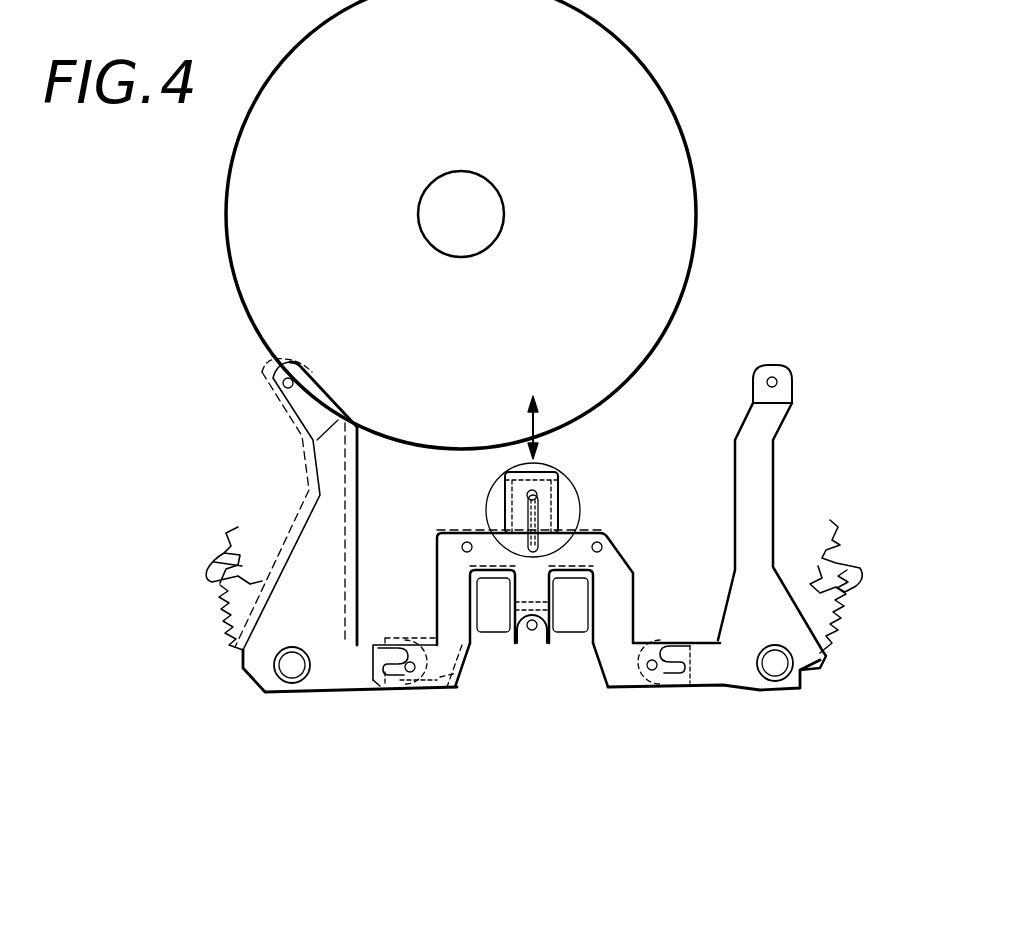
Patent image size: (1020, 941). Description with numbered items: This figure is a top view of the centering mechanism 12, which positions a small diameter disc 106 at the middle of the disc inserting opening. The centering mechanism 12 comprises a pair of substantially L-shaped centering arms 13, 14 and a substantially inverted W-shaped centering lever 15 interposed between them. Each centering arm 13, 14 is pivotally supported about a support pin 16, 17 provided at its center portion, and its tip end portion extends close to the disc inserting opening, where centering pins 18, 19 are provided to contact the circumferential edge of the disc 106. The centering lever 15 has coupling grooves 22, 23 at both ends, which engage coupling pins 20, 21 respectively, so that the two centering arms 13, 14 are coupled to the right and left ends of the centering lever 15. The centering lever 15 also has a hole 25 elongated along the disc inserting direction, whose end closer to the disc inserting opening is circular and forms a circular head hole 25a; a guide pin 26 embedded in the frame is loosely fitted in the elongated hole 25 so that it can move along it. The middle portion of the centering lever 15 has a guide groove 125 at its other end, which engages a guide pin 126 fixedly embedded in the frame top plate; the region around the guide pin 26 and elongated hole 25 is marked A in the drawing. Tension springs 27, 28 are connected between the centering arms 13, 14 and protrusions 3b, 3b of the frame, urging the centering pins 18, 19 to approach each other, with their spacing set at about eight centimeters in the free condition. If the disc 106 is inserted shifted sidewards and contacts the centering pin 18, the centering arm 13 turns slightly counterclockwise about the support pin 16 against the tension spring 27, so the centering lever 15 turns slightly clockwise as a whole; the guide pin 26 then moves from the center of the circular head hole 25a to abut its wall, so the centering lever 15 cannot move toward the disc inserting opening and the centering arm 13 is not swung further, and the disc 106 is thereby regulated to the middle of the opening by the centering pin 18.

The small diameter disc 106 is at (670, 192).
The centering mechanism 12 is at (549, 742).
The centering arm 13 is at (320, 493).
The centering arm 14 is at (760, 482).
The centering lever 15 is at (607, 642).
The support pin 16 is at (291, 672).
The support pin 17 is at (773, 668).
The centering pin 18 is at (283, 383).
The centering pin 19 is at (783, 373).
The coupling pin 20 is at (412, 677).
The coupling pin 21 is at (650, 683).
The coupling groove 22 is at (378, 648).
The coupling groove 23 is at (687, 647).
The elongated hole 25 is at (534, 517).
The circular head hole 25a is at (538, 497).
The guide pin 26 is at (512, 489).
The tension spring 27 is at (228, 630).
The tension spring 28 is at (840, 613).
The protrusion 3b is at (225, 551).
The guide groove 125 is at (537, 640).
The guide pin 126 is at (533, 632).
The detail region A is at (563, 471).